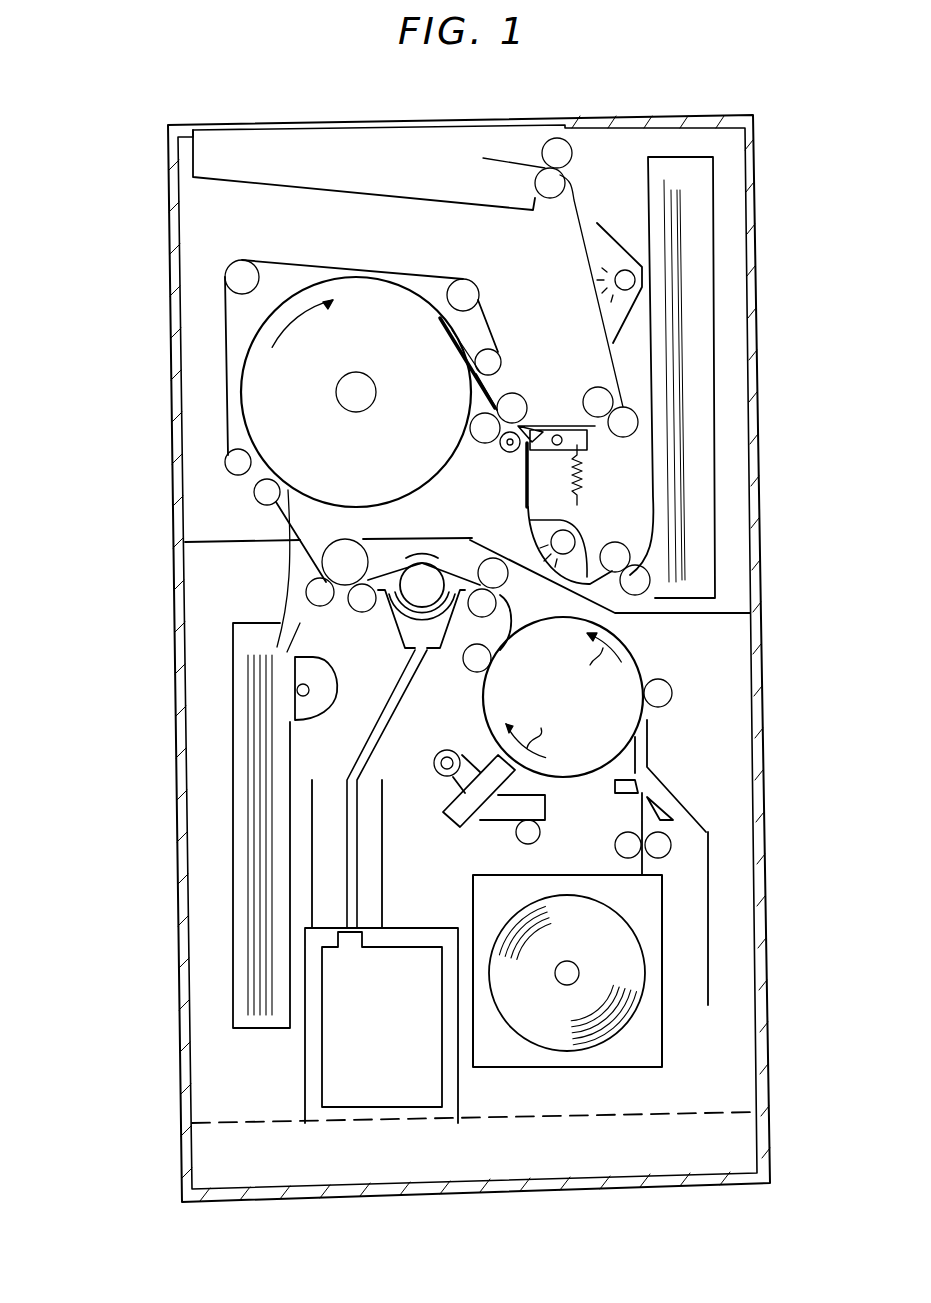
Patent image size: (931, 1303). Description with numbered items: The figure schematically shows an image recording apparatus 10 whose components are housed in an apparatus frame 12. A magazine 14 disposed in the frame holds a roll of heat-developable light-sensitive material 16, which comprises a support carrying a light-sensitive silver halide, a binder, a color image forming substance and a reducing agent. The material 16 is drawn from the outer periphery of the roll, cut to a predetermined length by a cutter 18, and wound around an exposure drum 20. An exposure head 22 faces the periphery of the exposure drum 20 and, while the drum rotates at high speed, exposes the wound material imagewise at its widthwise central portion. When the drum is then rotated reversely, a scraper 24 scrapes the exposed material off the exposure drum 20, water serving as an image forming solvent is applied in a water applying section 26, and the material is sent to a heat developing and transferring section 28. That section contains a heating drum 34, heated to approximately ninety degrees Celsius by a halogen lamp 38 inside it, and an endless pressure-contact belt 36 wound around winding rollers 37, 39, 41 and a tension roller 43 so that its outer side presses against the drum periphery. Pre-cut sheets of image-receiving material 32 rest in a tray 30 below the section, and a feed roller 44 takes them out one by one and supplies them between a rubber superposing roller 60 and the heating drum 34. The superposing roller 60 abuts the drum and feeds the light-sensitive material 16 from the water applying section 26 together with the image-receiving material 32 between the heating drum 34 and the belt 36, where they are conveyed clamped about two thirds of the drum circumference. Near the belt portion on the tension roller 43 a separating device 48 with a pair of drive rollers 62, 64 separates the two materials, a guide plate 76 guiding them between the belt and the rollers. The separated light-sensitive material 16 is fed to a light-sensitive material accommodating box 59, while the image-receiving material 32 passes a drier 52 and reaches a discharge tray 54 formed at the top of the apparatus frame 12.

The image recording apparatus 10 is at (120, 228).
The apparatus frame 12 is at (760, 640).
The magazine 14 is at (663, 1040).
The heat-developable light-sensitive material 16 is at (647, 910).
The cutter 18 is at (630, 795).
The exposure drum 20 is at (640, 652).
The exposure head 22 is at (445, 818).
The scraper 24 is at (513, 623).
The water applying section 26 is at (433, 655).
The heat developing and transferring section 28 is at (358, 252).
The tray 30 is at (233, 750).
The image-receiving material 32 is at (248, 832).
The heating drum 34 is at (425, 484).
The endless pressure-contact belt 36 is at (305, 262).
The winding roller 37 is at (228, 462).
The halogen lamp 38 is at (375, 392).
The winding roller 39 is at (242, 272).
The winding roller 41 is at (455, 283).
The tension roller 43 is at (477, 325).
The feed roller 44 is at (323, 720).
The separating device 48 is at (533, 370).
The drier 52 is at (617, 222).
The discharge tray 54 is at (450, 207).
The light-sensitive material accommodating box 59 is at (722, 400).
The superposing roller 60 is at (258, 498).
The drive roller 62 is at (522, 397).
The drive roller 64 is at (477, 450).
The guide plate 76 is at (472, 395).